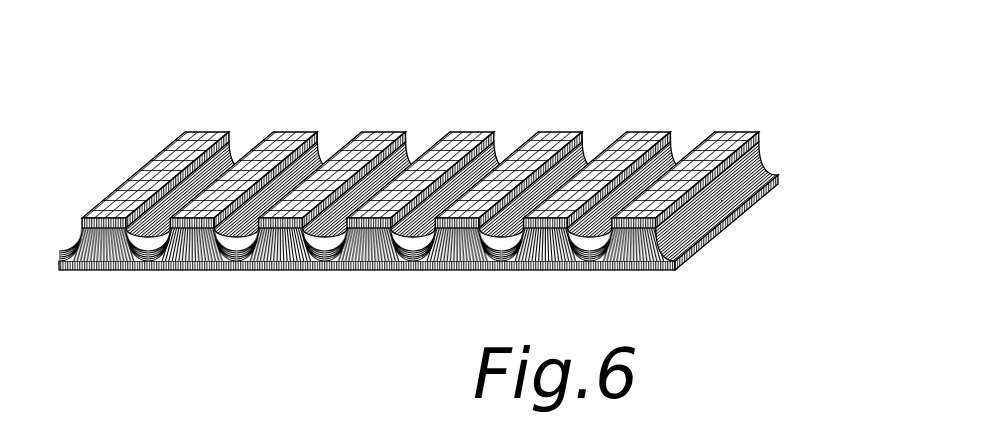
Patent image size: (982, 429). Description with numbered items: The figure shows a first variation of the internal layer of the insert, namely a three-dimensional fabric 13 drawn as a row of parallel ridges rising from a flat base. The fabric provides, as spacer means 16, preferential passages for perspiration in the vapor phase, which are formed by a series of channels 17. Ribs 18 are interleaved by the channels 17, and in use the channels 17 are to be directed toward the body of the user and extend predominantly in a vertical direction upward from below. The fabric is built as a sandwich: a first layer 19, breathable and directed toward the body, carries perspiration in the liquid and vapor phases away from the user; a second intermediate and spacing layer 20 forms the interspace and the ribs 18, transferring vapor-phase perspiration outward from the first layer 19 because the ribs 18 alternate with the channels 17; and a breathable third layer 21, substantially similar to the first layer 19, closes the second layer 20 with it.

The structured composite layer 13 is at (127, 170).
The spacer means 16 is at (604, 137).
The channels 17 is at (505, 148).
The ribs 18 is at (448, 257).
The first layer 19 is at (645, 140).
The second intermediate and spacing layer 20 is at (762, 160).
The third layer 21 is at (702, 243).